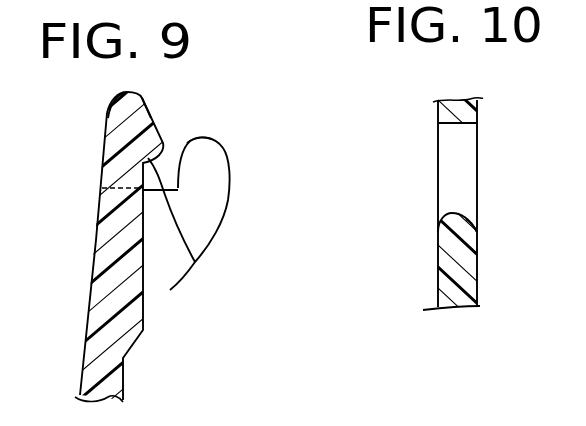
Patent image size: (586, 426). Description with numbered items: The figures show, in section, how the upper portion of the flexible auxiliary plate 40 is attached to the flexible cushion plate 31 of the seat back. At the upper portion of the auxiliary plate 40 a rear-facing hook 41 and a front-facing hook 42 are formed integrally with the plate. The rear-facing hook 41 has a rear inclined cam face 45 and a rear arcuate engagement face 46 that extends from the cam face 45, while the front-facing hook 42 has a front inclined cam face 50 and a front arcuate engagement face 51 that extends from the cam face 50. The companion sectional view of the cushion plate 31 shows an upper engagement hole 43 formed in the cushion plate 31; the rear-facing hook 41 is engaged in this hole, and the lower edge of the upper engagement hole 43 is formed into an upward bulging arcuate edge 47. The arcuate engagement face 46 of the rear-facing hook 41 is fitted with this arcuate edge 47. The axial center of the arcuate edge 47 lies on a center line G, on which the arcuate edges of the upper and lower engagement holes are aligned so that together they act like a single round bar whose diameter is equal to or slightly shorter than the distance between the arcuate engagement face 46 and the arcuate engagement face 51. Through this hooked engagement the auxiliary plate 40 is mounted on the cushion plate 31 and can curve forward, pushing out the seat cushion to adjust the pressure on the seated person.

In FIG. 9, the auxiliary plate 40 is at (98, 268).
In FIG. 9, the rear-facing hook 41 is at (108, 128).
In FIG. 9, the rear inclined cam face 45 is at (151, 109).
In FIG. 9, the front-facing hook 42 is at (218, 183).
In FIG. 9, the front inclined cam face 50 is at (183, 142).
In FIG. 9, the front arcuate engagement face 51 is at (178, 188).
In FIG. 9, the rear arcuate engagement face 46 is at (195, 262).
In FIG. 10, the upper engagement hole 43 is at (465, 168).
In FIG. 10, the upward bulging arcuate edge 47 is at (452, 212).
In FIG. 10, the center line G is at (470, 215).
In FIG. 10, the cushion plate 31 is at (467, 278).